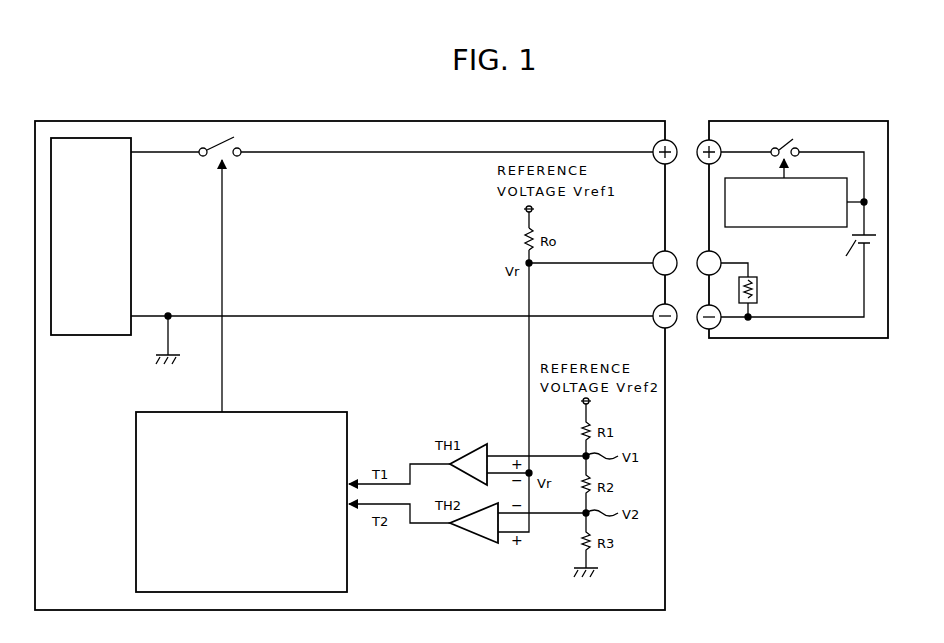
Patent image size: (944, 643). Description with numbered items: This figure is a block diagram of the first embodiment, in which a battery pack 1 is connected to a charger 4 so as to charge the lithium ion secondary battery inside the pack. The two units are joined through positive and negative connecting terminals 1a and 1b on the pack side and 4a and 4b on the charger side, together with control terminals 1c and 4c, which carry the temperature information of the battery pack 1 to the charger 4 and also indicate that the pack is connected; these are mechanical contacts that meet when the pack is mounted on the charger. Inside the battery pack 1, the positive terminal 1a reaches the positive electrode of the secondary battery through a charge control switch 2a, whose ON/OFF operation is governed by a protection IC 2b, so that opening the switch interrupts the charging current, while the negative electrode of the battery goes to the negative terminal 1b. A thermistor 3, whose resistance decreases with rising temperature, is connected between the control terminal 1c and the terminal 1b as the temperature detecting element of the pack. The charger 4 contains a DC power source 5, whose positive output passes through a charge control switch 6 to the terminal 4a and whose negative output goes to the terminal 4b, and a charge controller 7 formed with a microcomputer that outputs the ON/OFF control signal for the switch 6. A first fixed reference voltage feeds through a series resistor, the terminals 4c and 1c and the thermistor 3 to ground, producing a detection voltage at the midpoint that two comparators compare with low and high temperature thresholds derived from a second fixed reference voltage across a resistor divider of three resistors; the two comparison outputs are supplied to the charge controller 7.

The battery pack 1 is at (778, 121).
The positive connecting terminal 1a is at (700, 143).
The negative connecting terminal 1b is at (701, 328).
The control terminal 1c is at (700, 255).
The charge control switch 2a is at (799, 156).
The protection IC 2b is at (764, 227).
The thermistor 3 is at (758, 284).
The charger 4 is at (562, 121).
The positive connecting terminal 4a is at (655, 163).
The negative connecting terminal 4b is at (654, 308).
The control terminal 4c is at (654, 257).
The DC power source 5 is at (131, 230).
The charge control switch 6 is at (237, 158).
The charge controller 7 is at (318, 412).